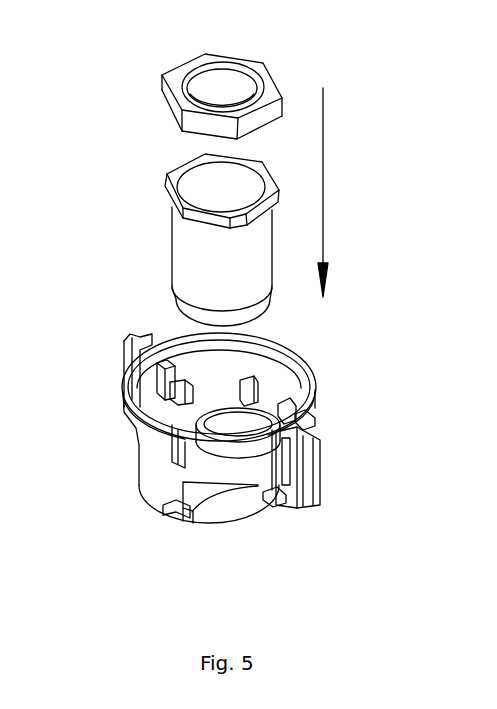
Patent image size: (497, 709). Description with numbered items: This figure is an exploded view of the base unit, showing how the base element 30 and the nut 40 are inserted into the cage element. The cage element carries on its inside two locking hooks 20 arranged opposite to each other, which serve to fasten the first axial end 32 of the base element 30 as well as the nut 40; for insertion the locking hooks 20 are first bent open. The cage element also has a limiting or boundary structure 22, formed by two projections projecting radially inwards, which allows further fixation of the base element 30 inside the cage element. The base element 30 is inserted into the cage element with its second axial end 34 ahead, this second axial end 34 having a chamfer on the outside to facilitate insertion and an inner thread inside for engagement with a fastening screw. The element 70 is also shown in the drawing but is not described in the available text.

The locking hooks 20 is at (241, 428).
The limiting or boundary structure 22 is at (258, 386).
The base element 30 is at (223, 238).
The first axial end 32 is at (165, 189).
The second axial end 34 is at (180, 307).
The nut 40 is at (265, 72).
The clip 70 is at (288, 410).